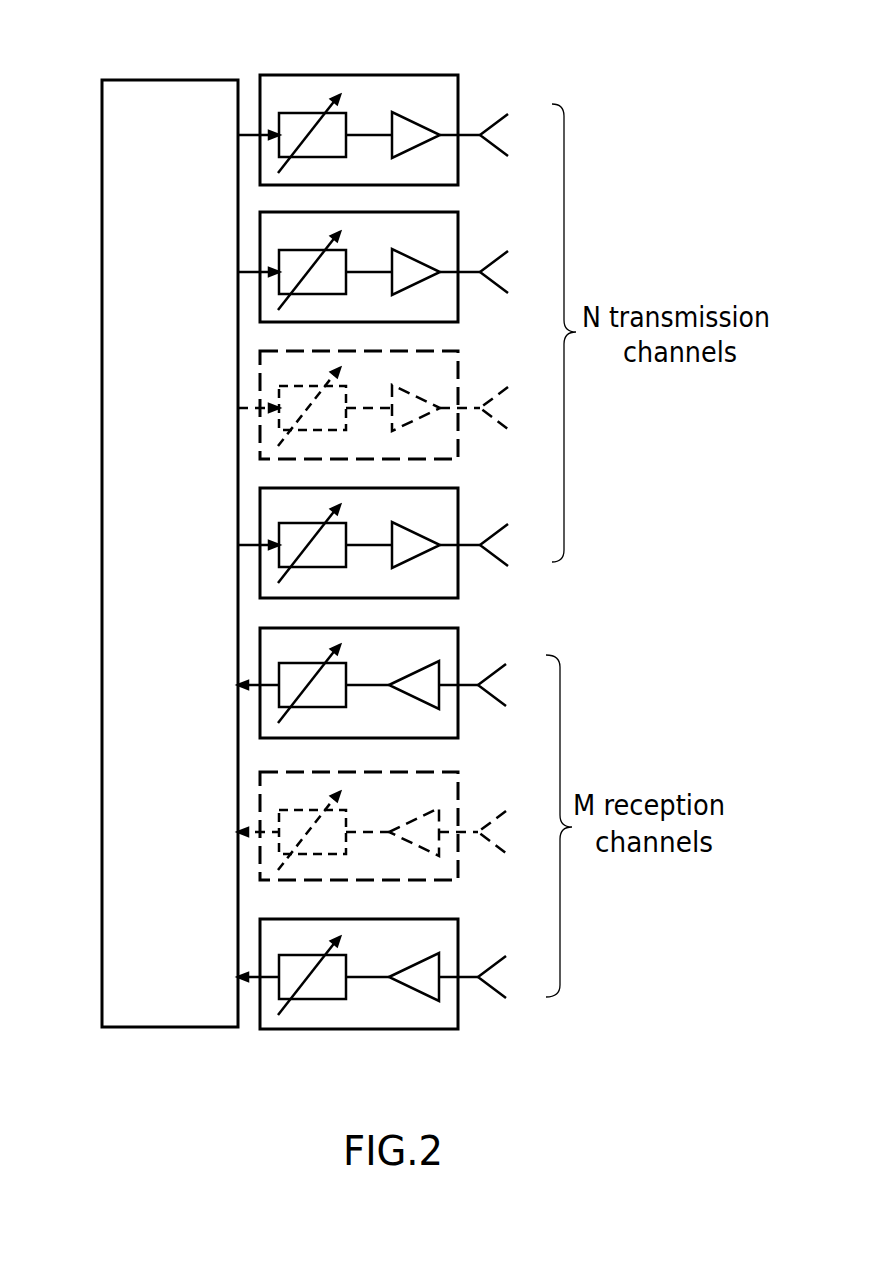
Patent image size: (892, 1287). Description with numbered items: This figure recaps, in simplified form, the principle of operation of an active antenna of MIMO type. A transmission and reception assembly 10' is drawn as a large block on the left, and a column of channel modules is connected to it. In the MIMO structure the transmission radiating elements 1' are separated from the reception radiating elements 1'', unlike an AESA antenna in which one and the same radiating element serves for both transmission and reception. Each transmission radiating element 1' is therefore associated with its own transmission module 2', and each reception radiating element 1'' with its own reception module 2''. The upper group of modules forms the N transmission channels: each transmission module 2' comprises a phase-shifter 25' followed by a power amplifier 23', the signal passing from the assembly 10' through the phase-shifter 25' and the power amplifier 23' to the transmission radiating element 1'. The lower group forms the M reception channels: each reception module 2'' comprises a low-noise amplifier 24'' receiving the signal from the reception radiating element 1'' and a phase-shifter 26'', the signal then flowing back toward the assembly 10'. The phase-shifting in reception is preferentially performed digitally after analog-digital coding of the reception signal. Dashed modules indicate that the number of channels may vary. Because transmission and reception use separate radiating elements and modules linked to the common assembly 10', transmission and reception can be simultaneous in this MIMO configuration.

The transmission and reception assembly 10' is at (170, 513).
The transmission module 2' is at (379, 300).
The reception module 2'' is at (380, 806).
The transmission radiating element 1' is at (505, 293).
The reception radiating element 1'' is at (507, 783).
The phase-shifter 25' is at (306, 333).
The power amplifier 23' is at (422, 324).
The phase-shifter 26'' is at (306, 824).
The low-noise amplifier 24'' is at (422, 815).